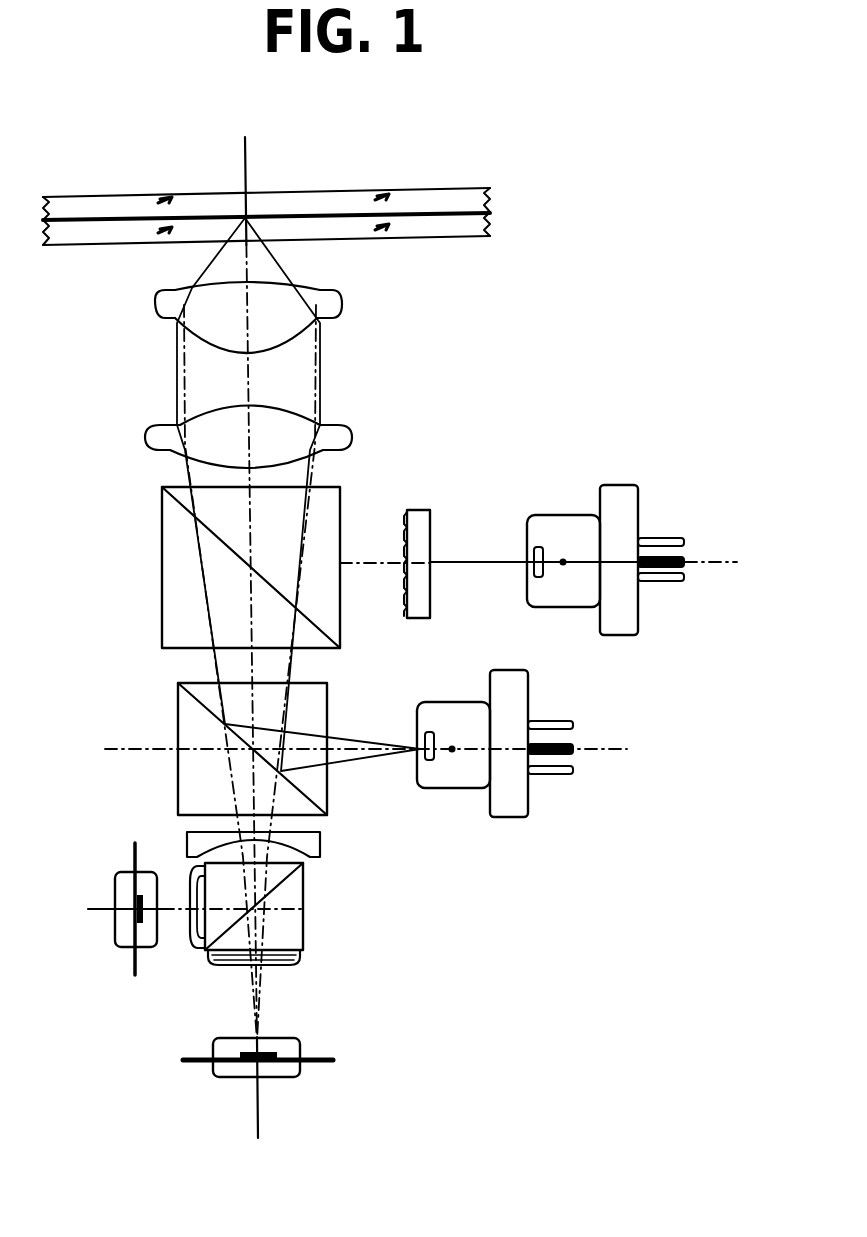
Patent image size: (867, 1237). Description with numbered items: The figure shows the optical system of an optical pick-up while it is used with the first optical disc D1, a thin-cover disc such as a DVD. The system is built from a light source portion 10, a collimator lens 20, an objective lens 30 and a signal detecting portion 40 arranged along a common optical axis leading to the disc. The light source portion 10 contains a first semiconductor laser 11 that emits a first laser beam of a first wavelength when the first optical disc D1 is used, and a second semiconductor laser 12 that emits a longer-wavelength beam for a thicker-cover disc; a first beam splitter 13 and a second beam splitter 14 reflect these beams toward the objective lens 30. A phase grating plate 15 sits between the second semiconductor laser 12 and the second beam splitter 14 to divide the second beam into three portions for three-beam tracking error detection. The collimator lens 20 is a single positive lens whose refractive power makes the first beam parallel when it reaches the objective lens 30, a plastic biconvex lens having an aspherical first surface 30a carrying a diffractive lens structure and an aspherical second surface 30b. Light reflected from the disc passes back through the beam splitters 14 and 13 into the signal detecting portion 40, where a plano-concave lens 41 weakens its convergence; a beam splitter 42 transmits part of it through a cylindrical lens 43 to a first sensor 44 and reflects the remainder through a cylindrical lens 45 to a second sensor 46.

The light source portion 10 is at (607, 667).
The first optical disc D1 is at (448, 230).
The objective lens 30 is at (332, 303).
The first surface 30a is at (207, 347).
The second surface 30b is at (277, 285).
The collimator lens 20 is at (352, 434).
The second beam splitter 14 is at (335, 625).
The phase grating plate 15 is at (418, 607).
The second semiconductor laser 12 is at (567, 598).
The first beam splitter 13 is at (325, 770).
The first semiconductor laser 11 is at (455, 783).
The signal detecting portion 40 is at (335, 917).
The plano-concave lens 41 is at (322, 842).
The beam splitter 42 is at (297, 927).
The cylindrical lens 43 is at (300, 953).
The first sensor 44 is at (298, 1042).
The cylindrical lens 45 is at (208, 952).
The second sensor 46 is at (145, 948).